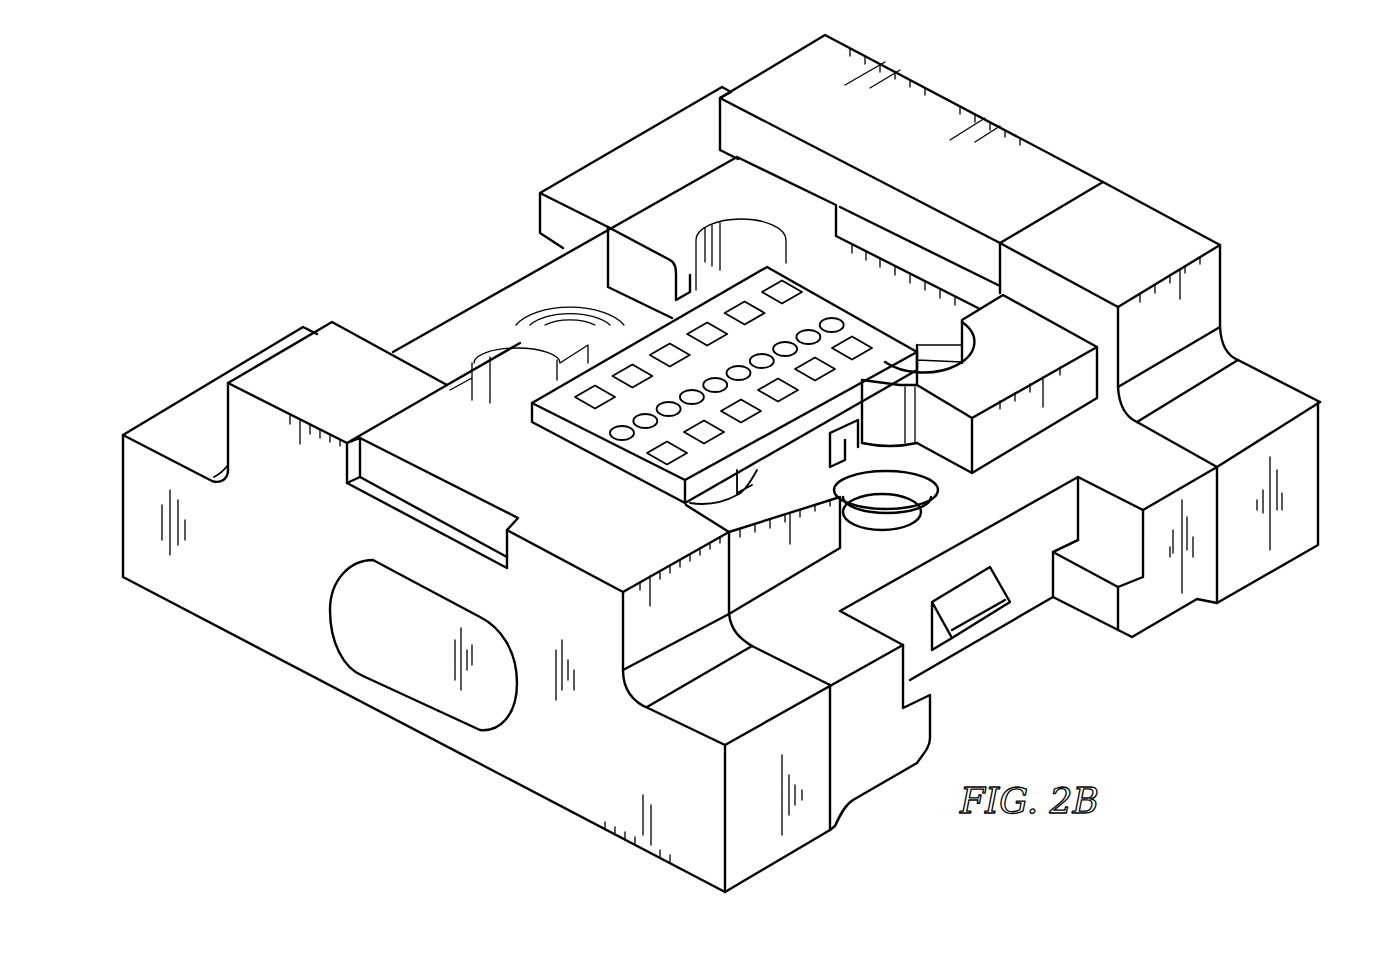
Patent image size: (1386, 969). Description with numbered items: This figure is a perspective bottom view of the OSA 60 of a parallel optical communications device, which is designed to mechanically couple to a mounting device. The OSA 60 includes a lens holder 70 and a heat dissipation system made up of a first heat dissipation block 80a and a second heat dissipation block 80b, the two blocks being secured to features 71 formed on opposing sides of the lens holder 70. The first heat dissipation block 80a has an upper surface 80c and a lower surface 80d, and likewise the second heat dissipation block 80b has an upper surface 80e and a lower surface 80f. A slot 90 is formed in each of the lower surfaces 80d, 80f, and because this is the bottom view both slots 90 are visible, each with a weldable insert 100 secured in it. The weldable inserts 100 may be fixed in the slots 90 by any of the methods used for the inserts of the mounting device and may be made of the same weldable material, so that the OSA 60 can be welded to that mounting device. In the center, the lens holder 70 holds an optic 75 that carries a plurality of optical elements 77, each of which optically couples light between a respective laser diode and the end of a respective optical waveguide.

The OSA 60 is at (1187, 84).
The lens holder 70 is at (1028, 598).
The features 71 is at (408, 662).
The optic 75 is at (675, 338).
The optical elements 77 is at (631, 412).
The first heat dissipation block 80a is at (688, 118).
The second heat dissipation block 80b is at (167, 427).
The upper surface 80c is at (1268, 582).
The lower surface 80d is at (1147, 233).
The upper surface 80e is at (224, 633).
The lower surface 80f is at (327, 368).
The slot 90 is at (375, 491).
The weldable insert 100 is at (450, 407).